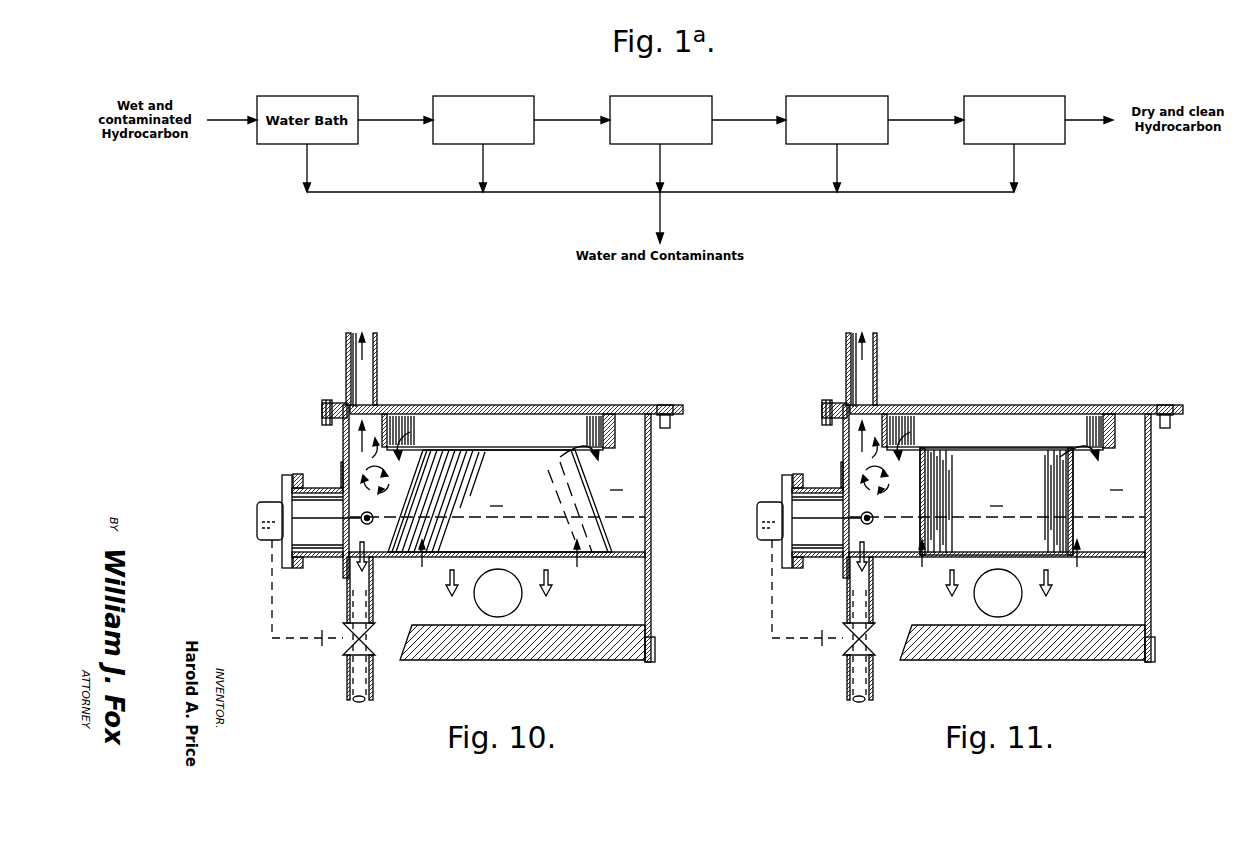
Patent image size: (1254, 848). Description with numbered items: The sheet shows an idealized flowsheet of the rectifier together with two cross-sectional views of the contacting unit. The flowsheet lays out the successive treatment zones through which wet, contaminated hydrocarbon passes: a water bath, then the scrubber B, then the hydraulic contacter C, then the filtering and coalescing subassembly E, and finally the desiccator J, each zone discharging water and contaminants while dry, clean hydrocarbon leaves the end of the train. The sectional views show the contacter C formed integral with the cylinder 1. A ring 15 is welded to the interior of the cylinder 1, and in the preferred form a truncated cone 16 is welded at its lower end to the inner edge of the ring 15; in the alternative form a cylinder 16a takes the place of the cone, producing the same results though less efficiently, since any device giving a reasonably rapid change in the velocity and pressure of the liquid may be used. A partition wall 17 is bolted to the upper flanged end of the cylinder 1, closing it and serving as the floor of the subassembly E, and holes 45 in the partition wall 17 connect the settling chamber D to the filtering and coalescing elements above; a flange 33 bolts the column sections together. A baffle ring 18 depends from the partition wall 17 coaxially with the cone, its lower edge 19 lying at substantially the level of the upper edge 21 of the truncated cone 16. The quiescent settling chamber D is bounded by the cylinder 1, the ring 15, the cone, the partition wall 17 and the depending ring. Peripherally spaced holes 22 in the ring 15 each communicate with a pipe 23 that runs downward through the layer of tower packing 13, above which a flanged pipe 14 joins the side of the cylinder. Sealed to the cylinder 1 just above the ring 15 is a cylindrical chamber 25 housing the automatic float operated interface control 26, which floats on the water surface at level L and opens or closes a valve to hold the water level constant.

In FIG. 1A, the scrubber subassembly B is at (475, 96).
In FIG. 1A, the hydraulic contacter C is at (652, 96).
In FIG. 10, the hydraulic contacter C is at (496, 497).
In FIG. 11, the hydraulic contacter C is at (996, 497).
In FIG. 1A, the filtering and coalescing subassembly E is at (830, 96).
In FIG. 1A, the desiccator J is at (1006, 96).
In FIG. 10, the quiescent settling chamber D is at (616, 481).
In FIG. 11, the quiescent settling chamber D is at (1116, 481).
In FIG. 10, the water level L is at (392, 516).
In FIG. 11, the water level L is at (997, 491).
In FIG. 10, the cylinder 1 is at (652, 540).
In FIG. 11, the cylinder 1 is at (1015, 533).
In FIG. 10, the layer of tower packing 13 is at (584, 625).
In FIG. 11, the layer of tower packing 13 is at (1022, 626).
In FIG. 10, the flanged pipe 14 is at (482, 606).
In FIG. 11, the flanged pipe 14 is at (998, 593).
In FIG. 10, the ring 15 is at (632, 558).
In FIG. 11, the ring 15 is at (997, 571).
In FIG. 10, the truncated cone 16 is at (404, 496).
In FIG. 11, the cylinder 16a is at (996, 501).
In FIG. 10, the partition wall 17 is at (532, 414).
In FIG. 11, the partition wall 17 is at (1016, 420).
In FIG. 10, the baffle ring 18 is at (409, 430).
In FIG. 11, the baffle ring 18 is at (909, 430).
In FIG. 10, the lower edge of baffle ring 19 is at (612, 447).
In FIG. 11, the lower edge of baffle ring 19 is at (1113, 440).
In FIG. 10, the upper edge of truncated cone 21 is at (510, 447).
In FIG. 11, the upper edge of truncated cone 21 is at (995, 463).
In FIG. 10, the holes 22 is at (362, 554).
In FIG. 11, the holes 22 is at (840, 541).
In FIG. 10, the pipe 23 is at (375, 606).
In FIG. 11, the pipe 23 is at (881, 629).
In FIG. 10, the cylindrical chamber 25 is at (336, 488).
In FIG. 11, the cylindrical chamber 25 is at (812, 509).
In FIG. 10, the automatic float operated interface control 26 is at (263, 502).
In FIG. 11, the automatic float operated interface control 26 is at (786, 557).
In FIG. 10, the flange 33 is at (322, 410).
In FIG. 11, the flange 33 is at (813, 404).
In FIG. 10, the holes 45 is at (352, 403).
In FIG. 11, the holes 45 is at (843, 392).